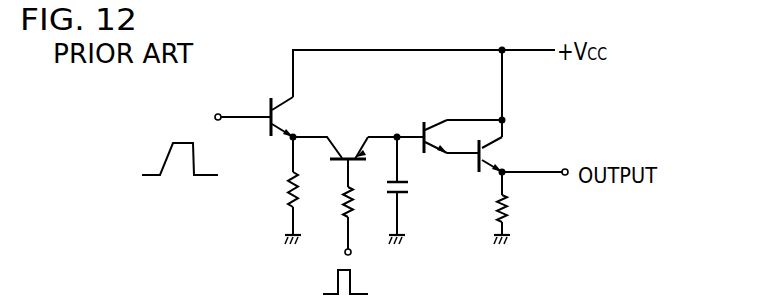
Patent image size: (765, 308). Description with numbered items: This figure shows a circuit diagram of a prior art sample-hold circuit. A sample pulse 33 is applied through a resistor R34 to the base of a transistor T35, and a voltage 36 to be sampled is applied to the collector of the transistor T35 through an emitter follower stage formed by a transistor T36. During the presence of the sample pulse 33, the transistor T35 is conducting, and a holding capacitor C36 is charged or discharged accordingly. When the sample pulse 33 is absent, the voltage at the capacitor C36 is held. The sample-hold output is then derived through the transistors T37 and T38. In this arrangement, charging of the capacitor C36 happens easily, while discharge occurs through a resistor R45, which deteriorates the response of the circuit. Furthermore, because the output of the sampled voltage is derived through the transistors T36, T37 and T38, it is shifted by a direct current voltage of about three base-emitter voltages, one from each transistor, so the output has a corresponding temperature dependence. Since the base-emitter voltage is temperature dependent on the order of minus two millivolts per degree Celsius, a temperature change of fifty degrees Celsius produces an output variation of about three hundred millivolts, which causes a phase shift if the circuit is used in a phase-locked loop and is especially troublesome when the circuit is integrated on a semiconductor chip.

The voltage to be sampled 36 is at (168, 146).
The sample pulse 33 is at (367, 268).
The transistor T36 is at (276, 115).
The transistor T35 is at (350, 148).
The transistor T37 is at (429, 122).
The transistor T38 is at (489, 154).
The resistor R45 is at (289, 190).
The resistor R34 is at (345, 203).
The holding capacitor C36 is at (413, 187).